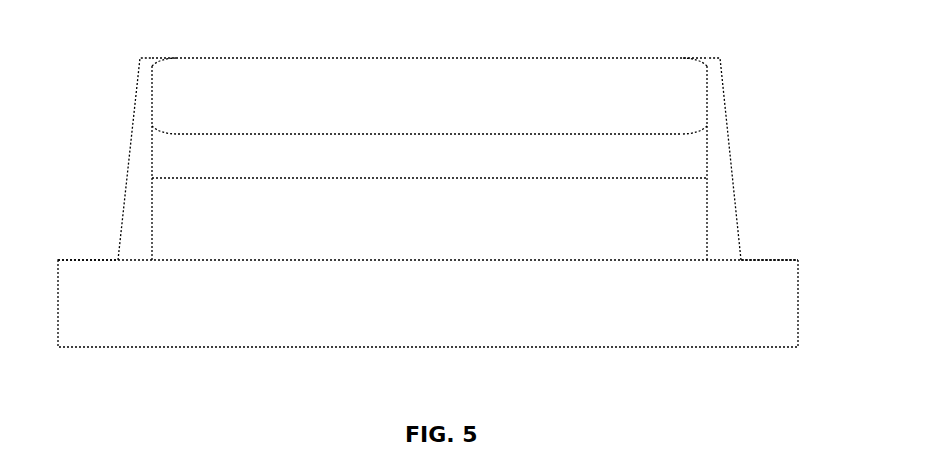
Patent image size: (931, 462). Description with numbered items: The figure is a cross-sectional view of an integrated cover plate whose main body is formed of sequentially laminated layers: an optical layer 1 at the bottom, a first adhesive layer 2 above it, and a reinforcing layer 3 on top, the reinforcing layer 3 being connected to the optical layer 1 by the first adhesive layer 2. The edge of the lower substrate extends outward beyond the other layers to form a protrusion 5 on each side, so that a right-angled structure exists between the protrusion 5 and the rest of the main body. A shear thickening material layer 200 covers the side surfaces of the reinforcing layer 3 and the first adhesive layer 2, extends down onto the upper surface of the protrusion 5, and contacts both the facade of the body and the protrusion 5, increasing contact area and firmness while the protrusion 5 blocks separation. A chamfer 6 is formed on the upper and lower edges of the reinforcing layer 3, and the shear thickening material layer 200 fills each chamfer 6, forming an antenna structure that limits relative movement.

The optical layer 1 is at (305, 320).
The first adhesive layer 2 is at (337, 160).
The reinforcing layer 3 is at (437, 87).
The protrusion 5 is at (87, 282).
The chamfer 6 is at (168, 130).
The shear thickening material layer 200 is at (127, 178).